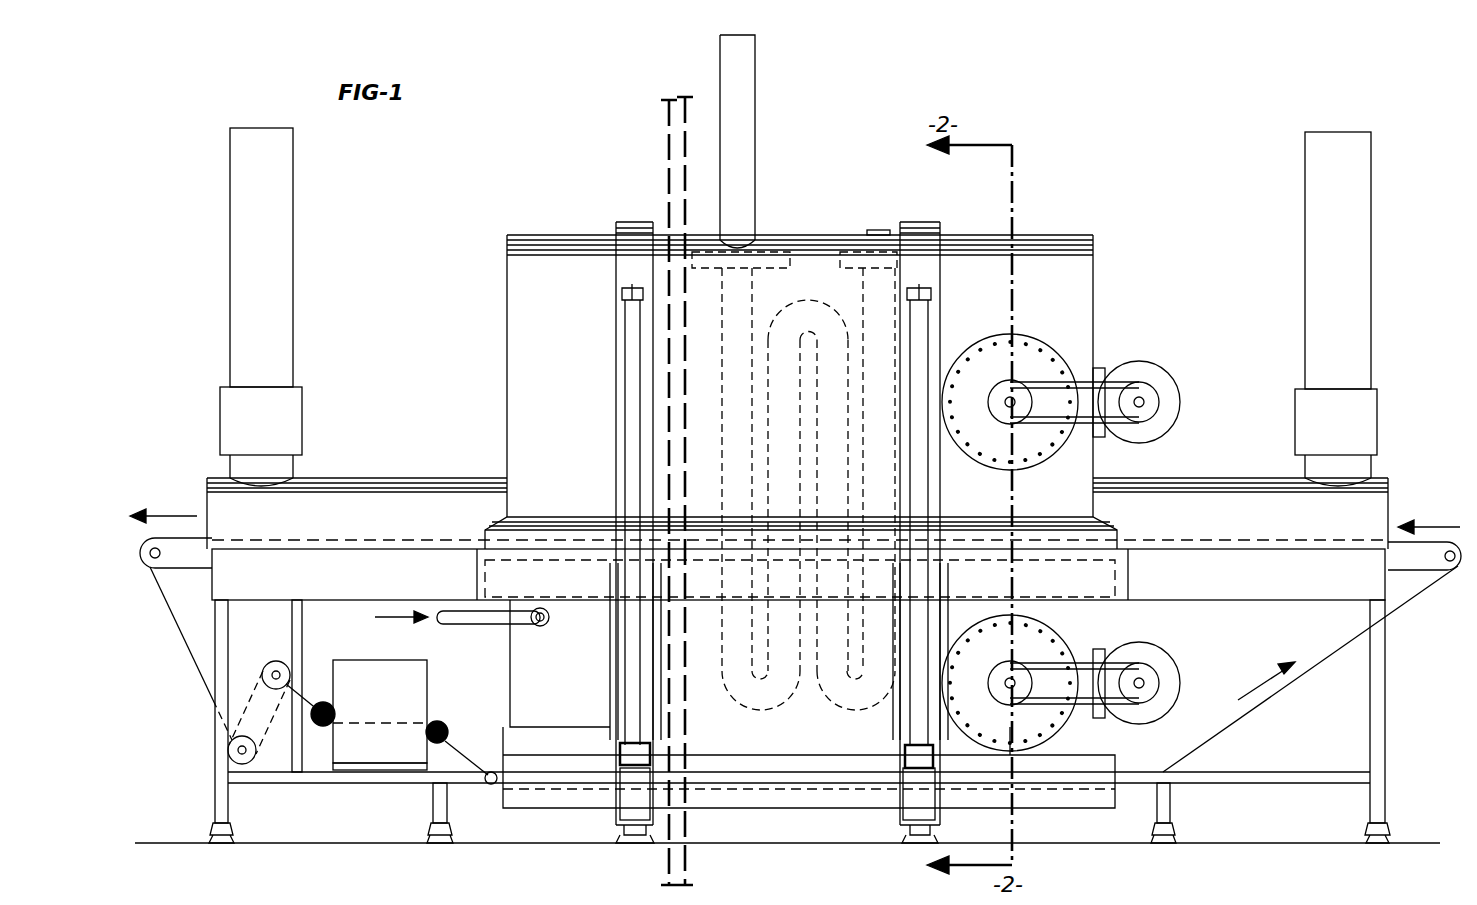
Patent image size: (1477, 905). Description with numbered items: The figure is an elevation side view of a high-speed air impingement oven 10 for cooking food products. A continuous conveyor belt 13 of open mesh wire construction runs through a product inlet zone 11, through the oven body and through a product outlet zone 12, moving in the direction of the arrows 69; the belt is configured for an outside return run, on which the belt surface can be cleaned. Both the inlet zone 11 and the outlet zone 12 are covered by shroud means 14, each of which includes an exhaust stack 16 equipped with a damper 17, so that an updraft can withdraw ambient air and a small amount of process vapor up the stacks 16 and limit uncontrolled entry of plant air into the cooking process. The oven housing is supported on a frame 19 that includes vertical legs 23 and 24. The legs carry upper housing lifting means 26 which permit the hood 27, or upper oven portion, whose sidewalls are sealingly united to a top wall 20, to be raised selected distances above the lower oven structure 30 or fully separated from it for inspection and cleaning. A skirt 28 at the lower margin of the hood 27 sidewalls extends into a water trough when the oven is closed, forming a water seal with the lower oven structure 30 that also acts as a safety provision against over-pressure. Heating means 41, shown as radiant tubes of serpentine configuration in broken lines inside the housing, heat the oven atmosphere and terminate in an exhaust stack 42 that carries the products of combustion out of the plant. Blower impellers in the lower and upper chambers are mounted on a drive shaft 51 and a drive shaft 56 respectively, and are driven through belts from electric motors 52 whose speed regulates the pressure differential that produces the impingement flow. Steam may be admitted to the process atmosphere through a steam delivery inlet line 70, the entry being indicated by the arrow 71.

The air impingement oven 10 is at (497, 365).
The product inlet zone 11 is at (1390, 497).
The product outlet zone 12 is at (207, 500).
The conveyor belt 13 is at (1412, 605).
The shroud means 14 is at (432, 478).
The exhaust stack 16 is at (293, 300).
The damper 17 is at (290, 430).
The frame 19 is at (1385, 748).
The top wall 20 is at (1120, 582).
The vertical leg 23 is at (620, 808).
The vertical leg 24 is at (905, 810).
The upper housing lifting means 26 is at (628, 340).
The hood 27 is at (1093, 288).
The skirt 28 is at (1117, 529).
The lower oven structure 30 is at (510, 693).
The heating means 41 is at (845, 250).
The exhaust stack 42 is at (755, 135).
The drive shaft 51 is at (1040, 715).
The electric motor 52 is at (1160, 365).
The drive shaft 56 is at (1015, 395).
The arrows 69 is at (175, 516).
The steam delivery inlet line 70 is at (470, 625).
The arrow 71 is at (395, 620).